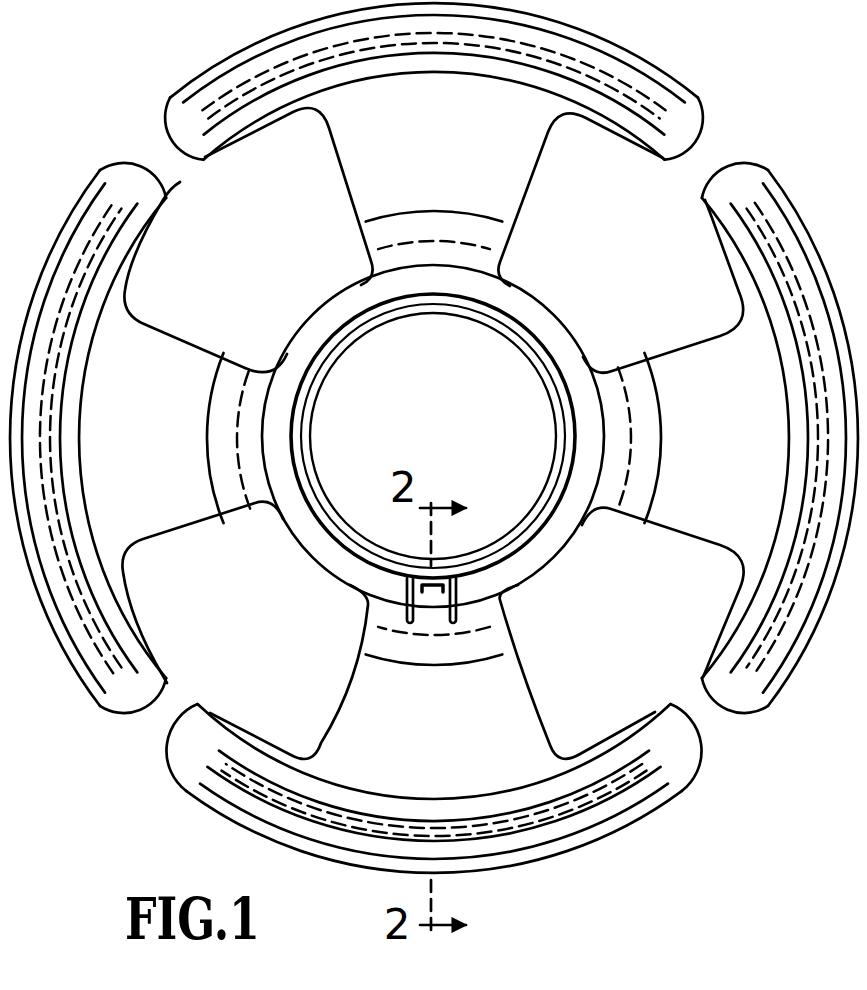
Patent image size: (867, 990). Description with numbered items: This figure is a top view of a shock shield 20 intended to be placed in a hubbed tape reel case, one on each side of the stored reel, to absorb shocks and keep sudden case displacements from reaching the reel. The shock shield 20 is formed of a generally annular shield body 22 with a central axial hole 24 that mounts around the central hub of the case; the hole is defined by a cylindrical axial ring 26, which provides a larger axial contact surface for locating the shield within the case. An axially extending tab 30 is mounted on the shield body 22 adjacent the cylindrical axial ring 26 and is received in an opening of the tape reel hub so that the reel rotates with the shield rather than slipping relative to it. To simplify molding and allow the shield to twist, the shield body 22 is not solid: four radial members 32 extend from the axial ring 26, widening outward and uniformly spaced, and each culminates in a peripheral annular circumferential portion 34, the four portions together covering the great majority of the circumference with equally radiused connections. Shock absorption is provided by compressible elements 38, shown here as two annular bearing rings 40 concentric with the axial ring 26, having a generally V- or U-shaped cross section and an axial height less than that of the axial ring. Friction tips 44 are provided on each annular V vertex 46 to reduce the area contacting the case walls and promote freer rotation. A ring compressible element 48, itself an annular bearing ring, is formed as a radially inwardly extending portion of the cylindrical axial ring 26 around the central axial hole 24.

The shock shield 20 is at (201, 808).
The shield body 22 is at (188, 503).
The central axial hole 24 is at (355, 367).
The cylindrical axial ring 26 is at (505, 316).
The axially extending tab 30 is at (433, 590).
The radial member 32 is at (348, 168).
The peripheral annular circumferential portion 34 is at (106, 160).
The compressible element 38 is at (165, 180).
The annular bearing ring 40 is at (236, 76).
The friction tip 44 is at (473, 48).
The annular V vertex 46 is at (146, 708).
The ring compressible element 48 is at (318, 485).